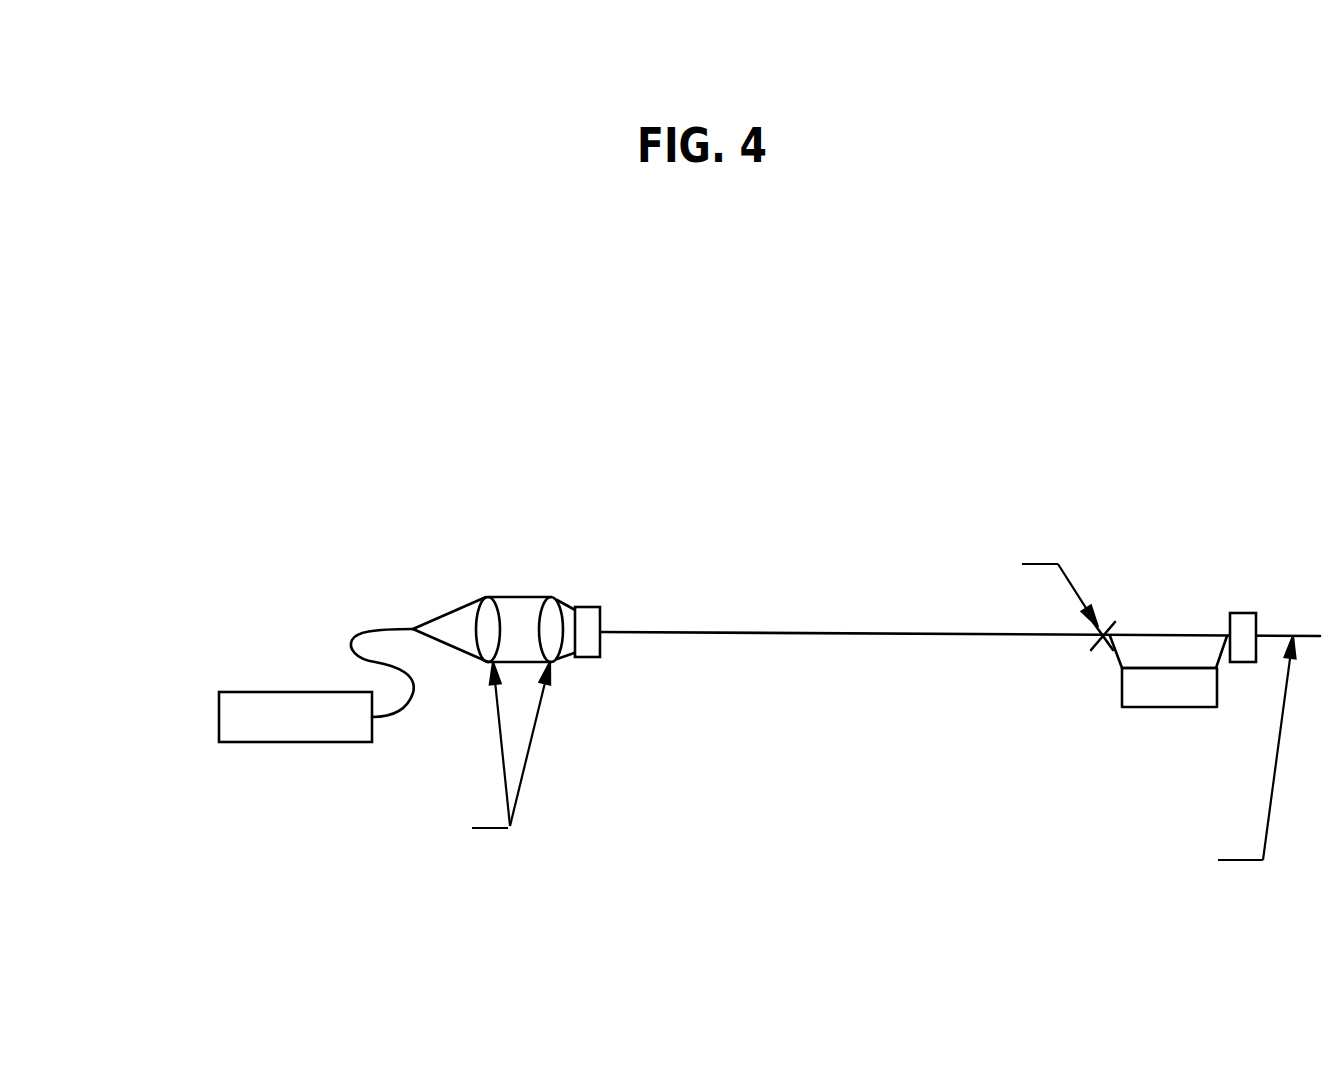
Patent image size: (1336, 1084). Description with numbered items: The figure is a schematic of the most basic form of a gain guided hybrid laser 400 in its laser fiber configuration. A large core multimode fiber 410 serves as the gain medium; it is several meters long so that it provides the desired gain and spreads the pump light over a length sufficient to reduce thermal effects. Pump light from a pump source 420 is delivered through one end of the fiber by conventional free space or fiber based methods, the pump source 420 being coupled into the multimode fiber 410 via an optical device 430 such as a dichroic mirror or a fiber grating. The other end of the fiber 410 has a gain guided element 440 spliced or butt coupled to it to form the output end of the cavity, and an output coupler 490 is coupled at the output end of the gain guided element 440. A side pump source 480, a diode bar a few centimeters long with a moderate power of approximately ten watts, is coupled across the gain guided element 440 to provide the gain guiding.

The hybrid laser 400 is at (510, 311).
The multimode fiber 410 is at (724, 611).
The pump source 420 is at (290, 672).
The optical device 430 is at (580, 586).
The gain guided element 440 is at (1159, 616).
The side pump source 480 is at (1159, 726).
The output coupler 490 is at (1234, 592).